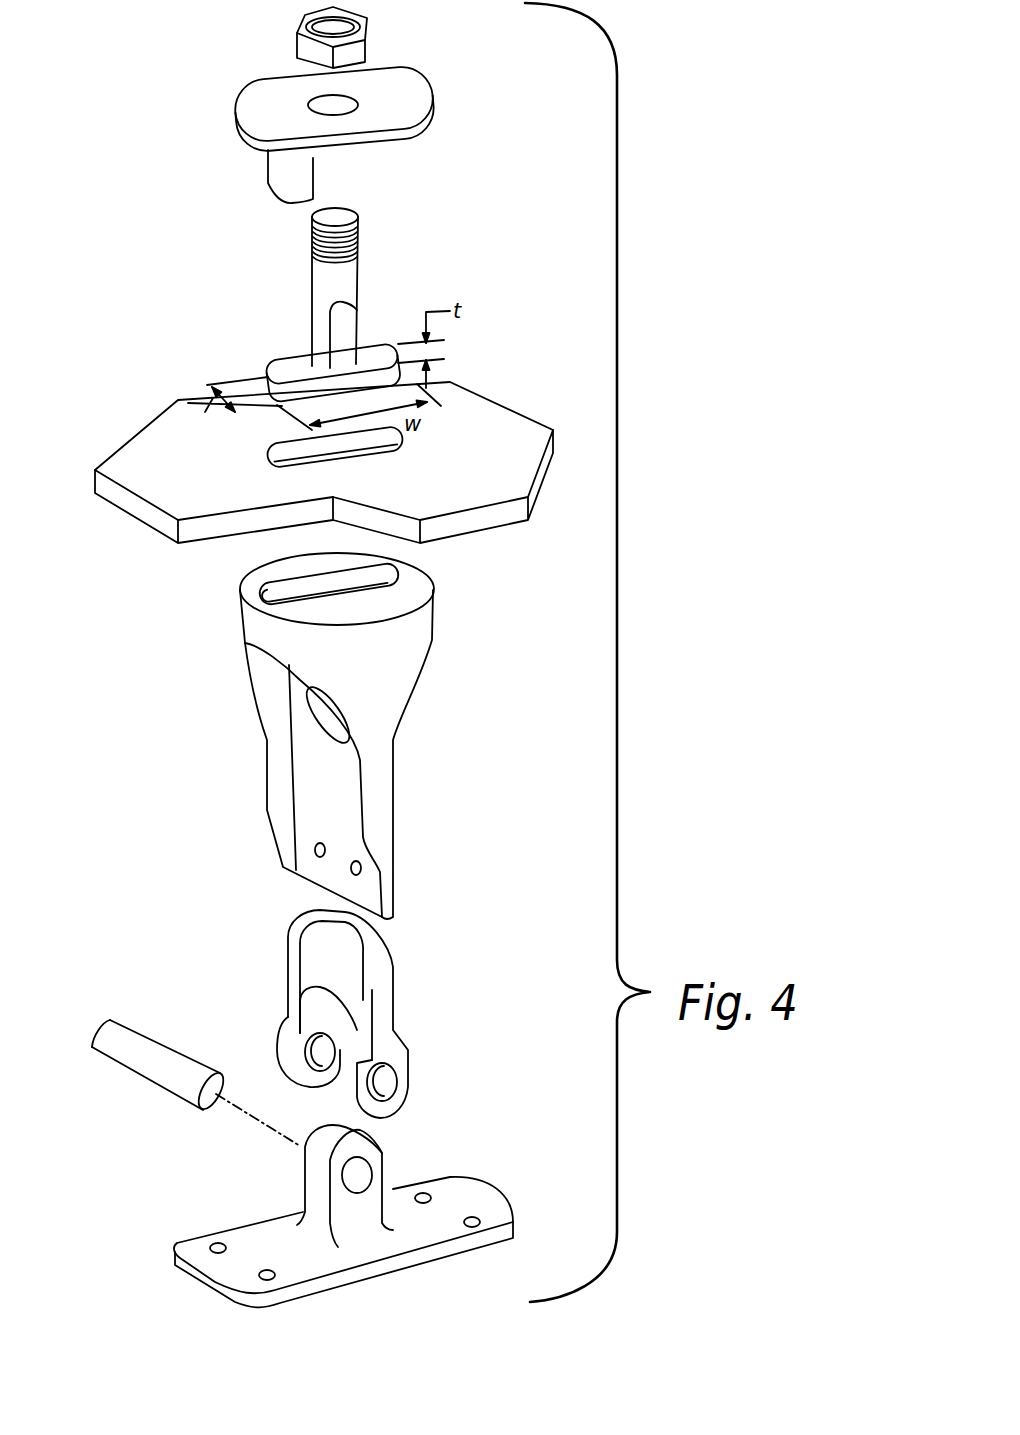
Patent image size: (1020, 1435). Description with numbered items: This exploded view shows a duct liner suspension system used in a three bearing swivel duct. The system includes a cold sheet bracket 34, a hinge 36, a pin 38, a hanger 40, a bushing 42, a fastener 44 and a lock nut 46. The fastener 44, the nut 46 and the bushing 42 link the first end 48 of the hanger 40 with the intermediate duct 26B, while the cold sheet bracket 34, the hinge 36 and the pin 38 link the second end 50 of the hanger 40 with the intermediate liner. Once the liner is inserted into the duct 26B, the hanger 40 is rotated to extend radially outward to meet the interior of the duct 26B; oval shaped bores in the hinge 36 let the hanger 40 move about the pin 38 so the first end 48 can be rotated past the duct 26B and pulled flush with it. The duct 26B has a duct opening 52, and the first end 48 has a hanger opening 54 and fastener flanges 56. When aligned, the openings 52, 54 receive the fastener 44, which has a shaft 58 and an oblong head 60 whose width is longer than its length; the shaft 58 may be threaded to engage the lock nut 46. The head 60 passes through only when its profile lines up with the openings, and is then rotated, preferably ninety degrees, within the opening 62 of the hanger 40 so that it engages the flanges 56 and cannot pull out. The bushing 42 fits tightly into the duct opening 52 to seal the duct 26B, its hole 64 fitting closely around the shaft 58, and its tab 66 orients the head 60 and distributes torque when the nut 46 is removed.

The intermediate duct 26B is at (324, 452).
The cold sheet bracket 34 is at (463, 1192).
The hinge 36 is at (382, 978).
The pin 38 is at (134, 1047).
The hanger 40 is at (348, 736).
The bushing 42 is at (333, 120).
The fastener 44 is at (339, 303).
The lock nut 46 is at (300, 31).
The first end 48 is at (347, 598).
The second end 50 is at (384, 993).
The duct opening 52 is at (373, 449).
The hanger opening 54 is at (293, 596).
The fastener flanges 56 is at (270, 598).
The shaft 58 is at (313, 245).
The head 60 is at (291, 368).
The opening of hanger 62 is at (308, 680).
The hole 64 is at (323, 108).
The tab 66 is at (268, 164).